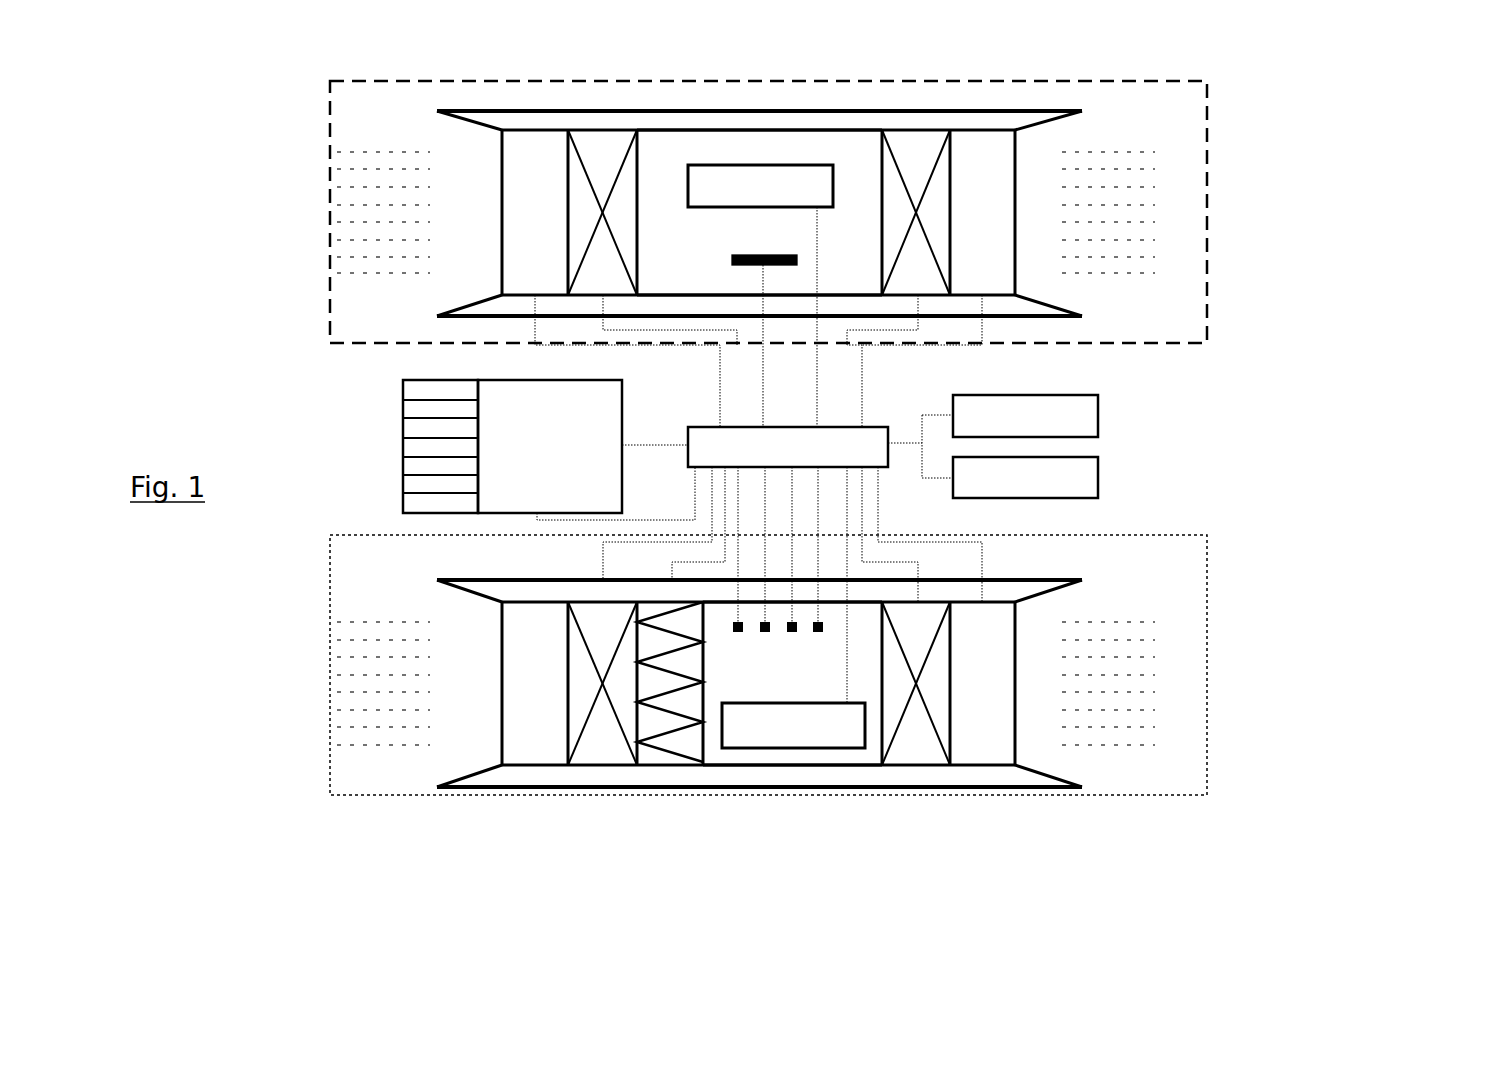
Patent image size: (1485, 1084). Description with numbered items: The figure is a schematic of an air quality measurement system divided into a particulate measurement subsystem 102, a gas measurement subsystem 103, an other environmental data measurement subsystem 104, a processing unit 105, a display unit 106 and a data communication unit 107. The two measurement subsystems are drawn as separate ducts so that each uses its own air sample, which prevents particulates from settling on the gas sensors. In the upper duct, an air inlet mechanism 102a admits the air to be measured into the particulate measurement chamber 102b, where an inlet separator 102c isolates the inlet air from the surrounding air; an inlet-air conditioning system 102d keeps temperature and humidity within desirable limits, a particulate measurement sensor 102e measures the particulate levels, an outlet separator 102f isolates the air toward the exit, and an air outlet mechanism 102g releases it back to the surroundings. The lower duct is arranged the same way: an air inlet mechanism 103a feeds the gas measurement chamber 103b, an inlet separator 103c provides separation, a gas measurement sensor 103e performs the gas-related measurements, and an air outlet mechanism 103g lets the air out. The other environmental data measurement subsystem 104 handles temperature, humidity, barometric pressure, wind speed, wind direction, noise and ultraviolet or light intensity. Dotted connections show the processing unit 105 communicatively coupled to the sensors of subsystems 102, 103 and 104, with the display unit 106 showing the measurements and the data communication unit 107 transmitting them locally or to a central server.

The particulate measurement subsystem 102 is at (1275, 190).
The air inlet mechanism 102a is at (477, 123).
The particulate measurement chamber 102b is at (680, 270).
The inlet separator 102c is at (602, 287).
The inlet-air conditioning system 102d is at (788, 733).
The particulate measurement sensor 102e is at (727, 258).
The outlet separator 102f is at (910, 148).
The air outlet mechanism 102g is at (983, 147).
The gas measurement subsystem 103 is at (1220, 662).
The air inlet mechanism 103a is at (533, 737).
The gas measurement chamber 103b is at (810, 667).
The inlet separator 103c is at (573, 688).
The gas measurement sensor 103e is at (828, 620).
The air outlet mechanism 103g is at (998, 742).
The other environmental data measurement subsystem 104 is at (440, 440).
The processing unit 105 is at (788, 441).
The display unit 106 is at (1088, 415).
The data communication unit 107 is at (1088, 470).